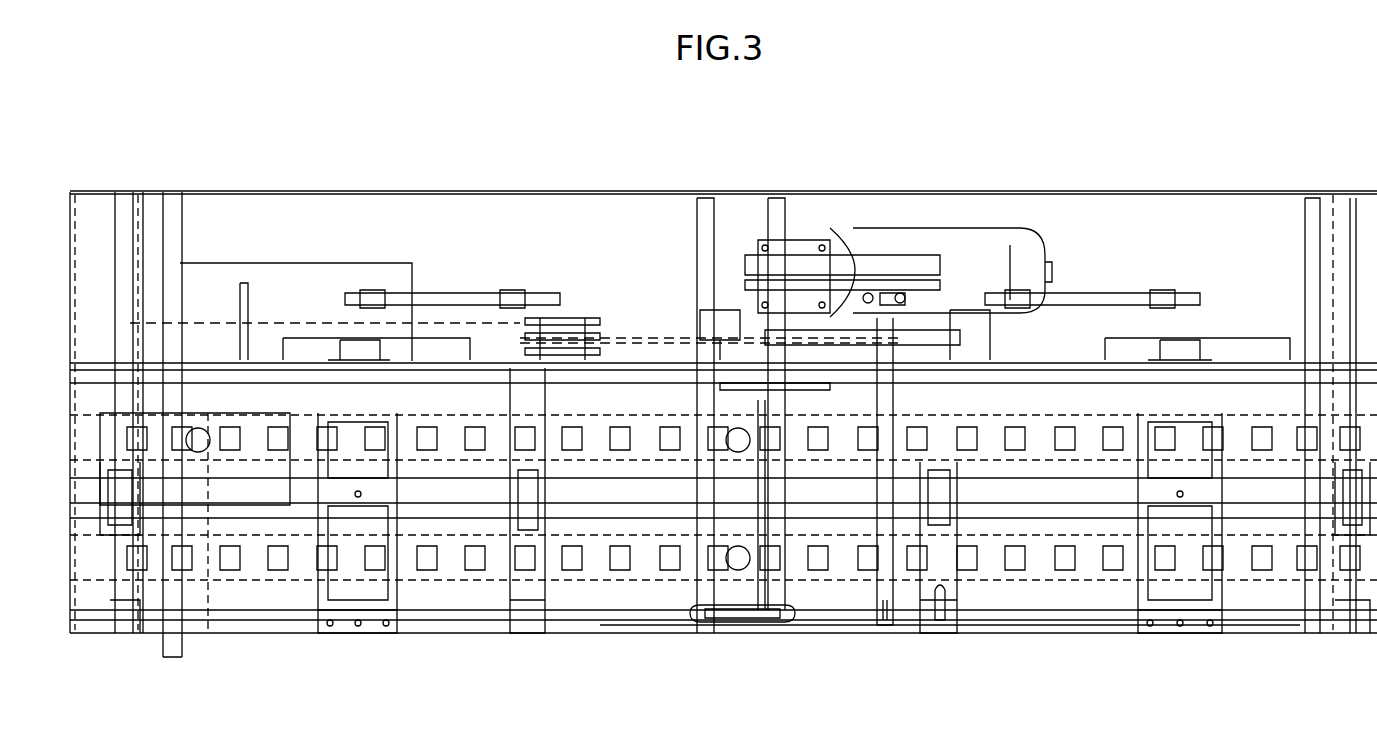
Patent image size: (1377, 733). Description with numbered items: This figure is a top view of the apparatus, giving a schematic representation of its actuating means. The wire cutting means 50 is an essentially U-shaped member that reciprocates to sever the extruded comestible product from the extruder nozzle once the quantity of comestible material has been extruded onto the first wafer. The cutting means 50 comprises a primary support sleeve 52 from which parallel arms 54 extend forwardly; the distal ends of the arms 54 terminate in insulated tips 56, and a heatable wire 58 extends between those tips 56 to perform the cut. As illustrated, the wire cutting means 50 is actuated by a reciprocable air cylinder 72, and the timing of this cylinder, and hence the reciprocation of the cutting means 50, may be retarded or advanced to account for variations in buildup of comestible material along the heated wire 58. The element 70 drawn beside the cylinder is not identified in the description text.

The wire cutting means 50 is at (895, 628).
The primary support sleeve 52 is at (885, 535).
The parallel arms 54 is at (848, 622).
The insulated tips 56 is at (785, 388).
The heatable wire 58 is at (787, 560).
The cylinder 70 is at (1040, 238).
The air cylinder 72 is at (825, 255).